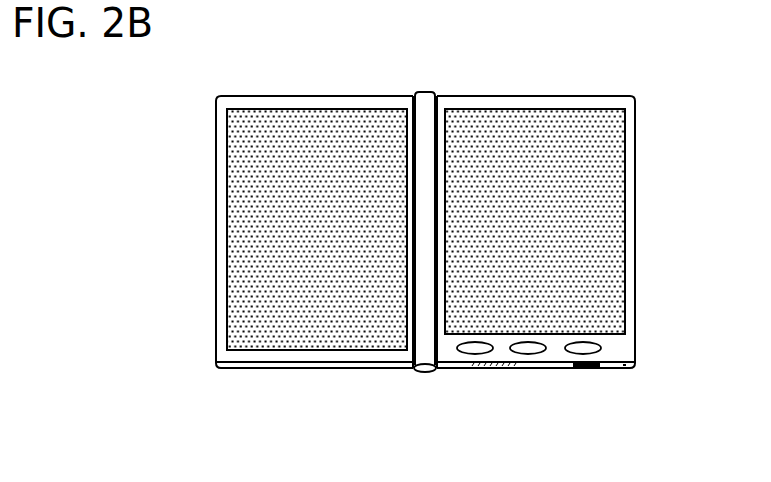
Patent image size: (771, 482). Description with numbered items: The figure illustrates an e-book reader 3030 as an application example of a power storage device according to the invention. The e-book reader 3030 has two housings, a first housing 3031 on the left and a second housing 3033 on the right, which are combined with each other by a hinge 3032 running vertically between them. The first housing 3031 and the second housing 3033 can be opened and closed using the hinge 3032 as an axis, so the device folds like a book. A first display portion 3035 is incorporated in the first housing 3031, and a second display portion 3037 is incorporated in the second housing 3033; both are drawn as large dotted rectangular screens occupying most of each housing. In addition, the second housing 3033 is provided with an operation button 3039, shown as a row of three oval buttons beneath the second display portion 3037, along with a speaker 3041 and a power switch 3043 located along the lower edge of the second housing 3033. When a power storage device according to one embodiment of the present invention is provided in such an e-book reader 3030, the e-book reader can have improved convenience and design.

The e-book reader 3030 is at (456, 76).
The first housing 3031 is at (222, 133).
The hinge 3032 is at (417, 371).
The second housing 3033 is at (629, 162).
The first display portion 3035 is at (273, 206).
The second display portion 3037 is at (597, 285).
The operation button 3039 is at (575, 350).
The speaker 3041 is at (484, 364).
The power switch 3043 is at (578, 364).